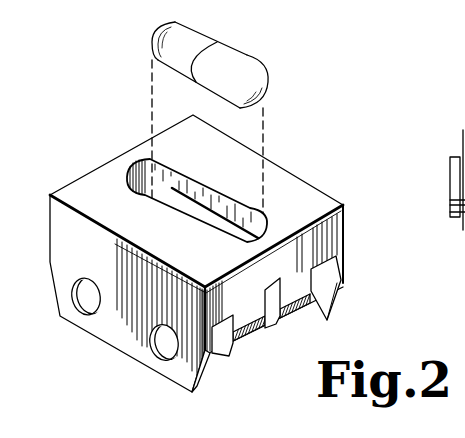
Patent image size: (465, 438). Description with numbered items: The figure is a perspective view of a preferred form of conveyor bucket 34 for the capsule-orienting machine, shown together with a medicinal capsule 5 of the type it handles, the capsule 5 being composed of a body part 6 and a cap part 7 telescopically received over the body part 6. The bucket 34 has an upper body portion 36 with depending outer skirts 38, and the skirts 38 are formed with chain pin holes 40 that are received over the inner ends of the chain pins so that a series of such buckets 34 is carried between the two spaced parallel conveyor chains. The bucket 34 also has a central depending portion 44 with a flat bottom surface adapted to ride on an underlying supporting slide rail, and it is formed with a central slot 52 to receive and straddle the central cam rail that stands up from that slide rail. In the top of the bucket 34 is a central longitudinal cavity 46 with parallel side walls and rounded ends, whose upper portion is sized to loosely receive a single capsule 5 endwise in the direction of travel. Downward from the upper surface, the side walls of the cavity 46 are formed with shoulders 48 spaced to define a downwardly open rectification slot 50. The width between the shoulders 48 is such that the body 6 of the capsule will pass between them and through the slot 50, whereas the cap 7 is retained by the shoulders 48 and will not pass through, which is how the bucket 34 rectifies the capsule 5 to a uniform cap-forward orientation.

The medicinal capsule 5 is at (221, 107).
The body part 6 is at (188, 33).
The cap part 7 is at (230, 57).
The conveyor bucket 34 is at (333, 196).
The upper body portion 36 is at (345, 241).
The outer skirt 38 is at (339, 297).
The chain pin hole 40 is at (90, 314).
The central depending portion 44 is at (296, 318).
The central longitudinal cavity 46 is at (213, 198).
The shoulder 48 is at (232, 205).
The rectification slot 50 is at (156, 191).
The central slot 52 is at (268, 335).